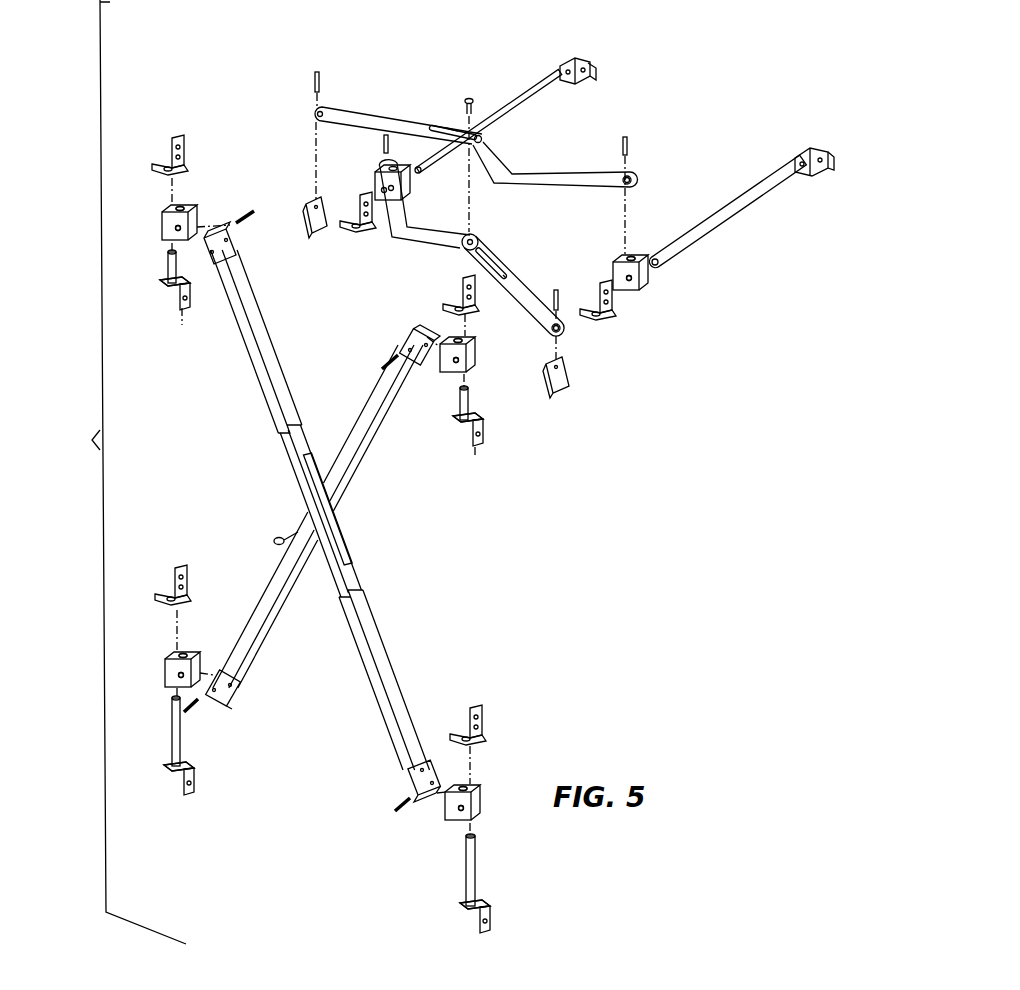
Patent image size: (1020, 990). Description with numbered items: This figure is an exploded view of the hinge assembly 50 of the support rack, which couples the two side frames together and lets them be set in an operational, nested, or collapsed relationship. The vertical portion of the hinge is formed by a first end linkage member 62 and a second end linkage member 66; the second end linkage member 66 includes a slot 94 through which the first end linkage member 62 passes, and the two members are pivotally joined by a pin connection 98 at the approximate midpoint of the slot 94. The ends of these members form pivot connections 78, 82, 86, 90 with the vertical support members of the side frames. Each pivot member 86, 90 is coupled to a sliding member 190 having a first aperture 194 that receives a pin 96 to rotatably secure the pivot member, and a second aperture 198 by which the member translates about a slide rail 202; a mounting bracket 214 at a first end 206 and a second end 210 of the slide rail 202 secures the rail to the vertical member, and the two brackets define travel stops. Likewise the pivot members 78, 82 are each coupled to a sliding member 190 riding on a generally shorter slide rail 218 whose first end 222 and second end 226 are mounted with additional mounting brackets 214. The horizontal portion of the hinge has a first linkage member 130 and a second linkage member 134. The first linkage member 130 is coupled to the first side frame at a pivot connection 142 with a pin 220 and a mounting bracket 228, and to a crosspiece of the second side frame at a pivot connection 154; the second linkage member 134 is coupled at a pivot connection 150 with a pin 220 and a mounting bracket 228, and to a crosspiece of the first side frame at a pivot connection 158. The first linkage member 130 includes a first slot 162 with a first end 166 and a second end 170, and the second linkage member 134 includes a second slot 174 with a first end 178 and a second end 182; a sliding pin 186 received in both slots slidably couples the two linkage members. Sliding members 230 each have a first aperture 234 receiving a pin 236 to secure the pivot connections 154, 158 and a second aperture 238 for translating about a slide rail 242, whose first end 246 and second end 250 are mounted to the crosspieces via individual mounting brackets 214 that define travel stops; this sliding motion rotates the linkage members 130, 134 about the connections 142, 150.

The hinge assembly 50 is at (70, 444).
The first end linkage member 62 is at (267, 613).
The second end linkage member 66 is at (375, 652).
The pivot connection 78 is at (407, 337).
The pivot connection 82 is at (212, 228).
The pivot connection 86 is at (225, 690).
The pivot connection 90 is at (423, 800).
The slot 94 is at (342, 543).
The pivot pin 96 is at (247, 224).
The pin connection 98 is at (274, 539).
The first linkage member 130 is at (516, 280).
The second linkage member 134 is at (545, 178).
The pivot connection 142 is at (563, 333).
The pivot connection 150 is at (313, 107).
The pivot connection 154 is at (380, 165).
The pivot connection 158 is at (632, 172).
The first slot 162 is at (484, 248).
The first end 166 is at (500, 260).
The second end 170 is at (472, 240).
The second slot 174 is at (446, 128).
The first end 178 is at (425, 125).
The second end 182 is at (483, 139).
The sliding pin 186 is at (478, 97).
The sliding member 190 is at (163, 223).
The first aperture 194 is at (185, 210).
The second aperture 198 is at (165, 205).
The slide rail 202 is at (170, 737).
The first end 206 is at (172, 773).
The second end 210 is at (170, 697).
The mounting bracket 214 is at (185, 143).
The slide rail 218 is at (165, 270).
The pin 220 is at (319, 70).
The first end 222 is at (165, 287).
The second end 226 is at (167, 252).
The mounting bracket 228 is at (307, 230).
The sliding member 230 is at (405, 188).
The first aperture 234 is at (645, 266).
The pin 236 is at (628, 138).
The second aperture 238 is at (377, 190).
The slide rail 242 is at (508, 104).
The first end 246 is at (422, 168).
The second end 250 is at (566, 80).